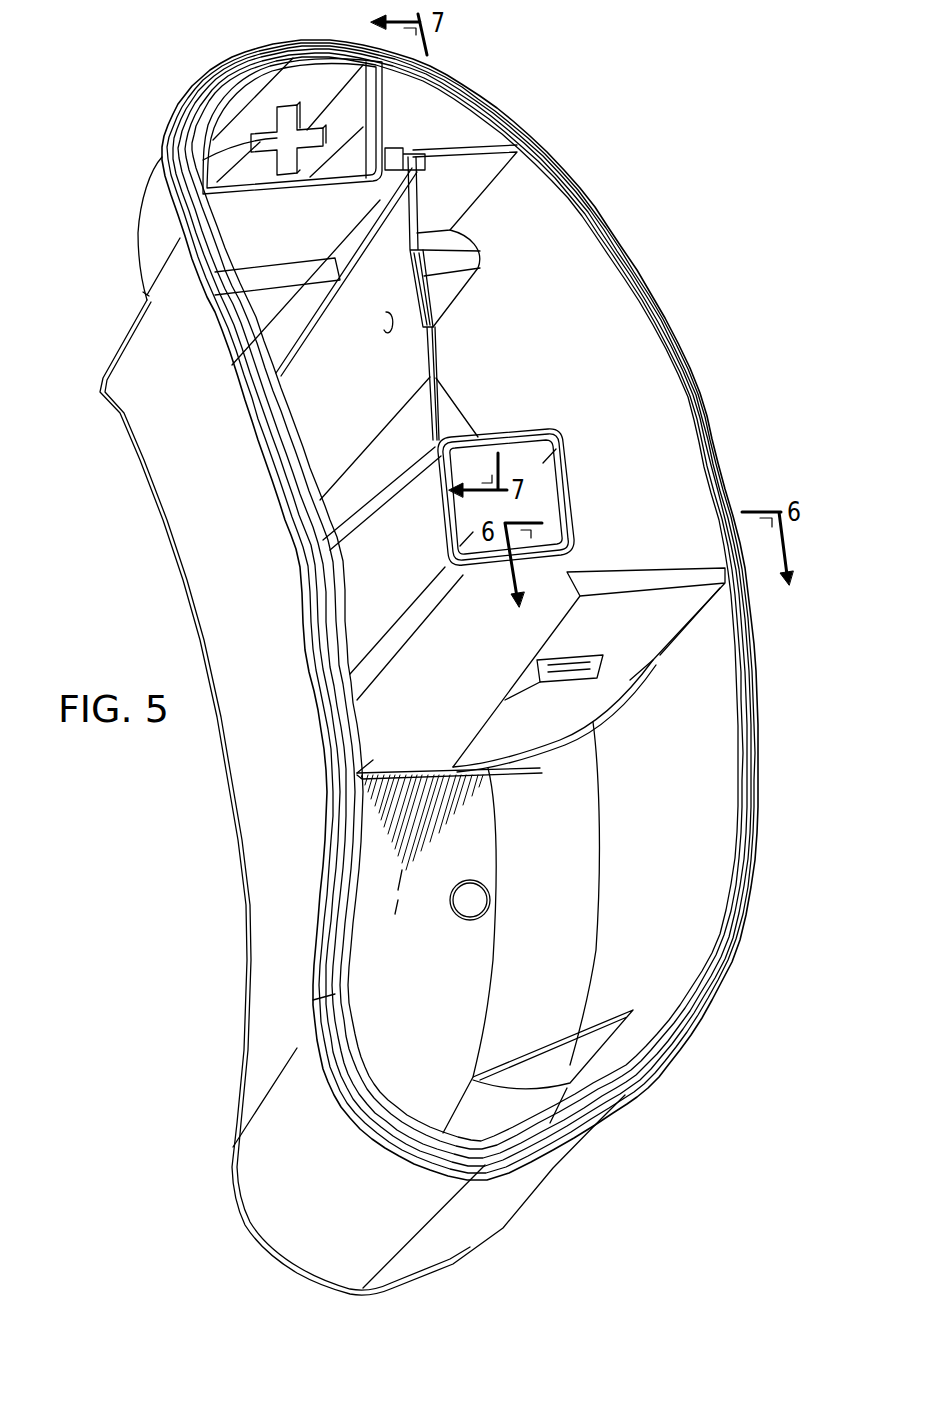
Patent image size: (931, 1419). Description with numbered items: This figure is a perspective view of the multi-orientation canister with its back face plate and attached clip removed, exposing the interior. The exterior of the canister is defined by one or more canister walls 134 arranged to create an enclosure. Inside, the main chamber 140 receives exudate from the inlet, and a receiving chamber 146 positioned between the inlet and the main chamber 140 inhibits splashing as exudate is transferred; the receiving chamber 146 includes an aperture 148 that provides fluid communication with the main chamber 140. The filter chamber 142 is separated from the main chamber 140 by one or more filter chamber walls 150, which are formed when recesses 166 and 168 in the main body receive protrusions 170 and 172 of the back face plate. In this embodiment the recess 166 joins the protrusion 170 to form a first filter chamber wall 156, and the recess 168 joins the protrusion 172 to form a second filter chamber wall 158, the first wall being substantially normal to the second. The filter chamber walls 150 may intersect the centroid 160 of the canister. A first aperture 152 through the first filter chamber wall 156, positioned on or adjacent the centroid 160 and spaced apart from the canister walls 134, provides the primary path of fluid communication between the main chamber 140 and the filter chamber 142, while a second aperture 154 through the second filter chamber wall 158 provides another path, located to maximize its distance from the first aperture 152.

The canister walls 134 is at (245, 908).
The main chamber 140 is at (444, 983).
The filter chamber 142 is at (625, 325).
The receiving chamber 146 is at (473, 131).
The aperture 148 is at (413, 157).
The filter chamber walls 150 is at (430, 290).
The first aperture 152 is at (553, 680).
The second aperture 154 is at (390, 320).
The first filter chamber wall 156 is at (665, 670).
The second filter chamber wall 158 is at (378, 394).
The centroid 160 is at (566, 690).
The recess 166 is at (388, 298).
The recess 168 is at (540, 680).
The protrusion 170 is at (418, 265).
The protrusion 172 is at (697, 610).